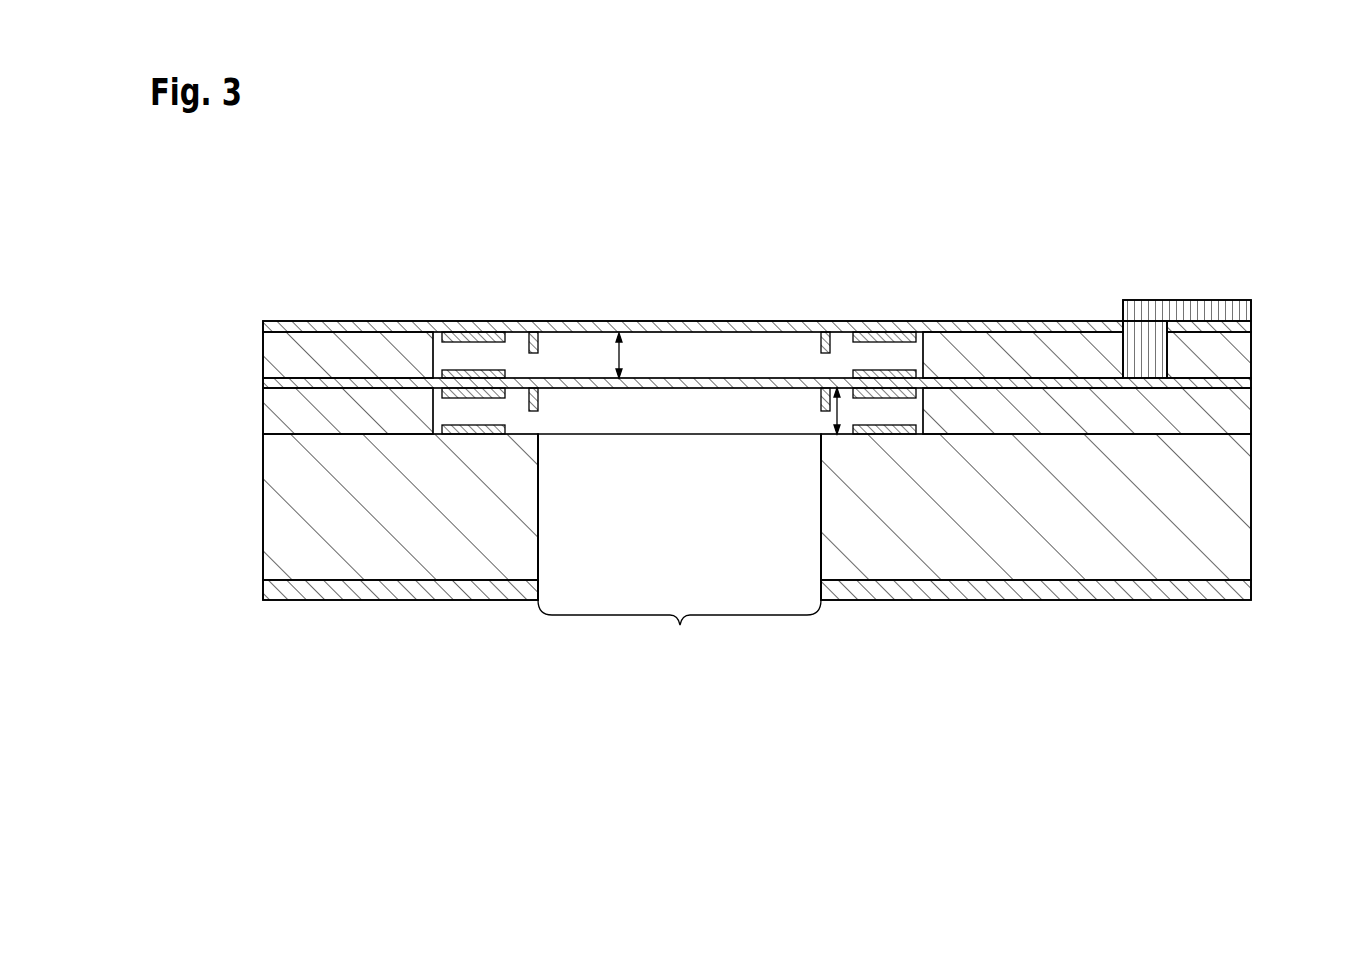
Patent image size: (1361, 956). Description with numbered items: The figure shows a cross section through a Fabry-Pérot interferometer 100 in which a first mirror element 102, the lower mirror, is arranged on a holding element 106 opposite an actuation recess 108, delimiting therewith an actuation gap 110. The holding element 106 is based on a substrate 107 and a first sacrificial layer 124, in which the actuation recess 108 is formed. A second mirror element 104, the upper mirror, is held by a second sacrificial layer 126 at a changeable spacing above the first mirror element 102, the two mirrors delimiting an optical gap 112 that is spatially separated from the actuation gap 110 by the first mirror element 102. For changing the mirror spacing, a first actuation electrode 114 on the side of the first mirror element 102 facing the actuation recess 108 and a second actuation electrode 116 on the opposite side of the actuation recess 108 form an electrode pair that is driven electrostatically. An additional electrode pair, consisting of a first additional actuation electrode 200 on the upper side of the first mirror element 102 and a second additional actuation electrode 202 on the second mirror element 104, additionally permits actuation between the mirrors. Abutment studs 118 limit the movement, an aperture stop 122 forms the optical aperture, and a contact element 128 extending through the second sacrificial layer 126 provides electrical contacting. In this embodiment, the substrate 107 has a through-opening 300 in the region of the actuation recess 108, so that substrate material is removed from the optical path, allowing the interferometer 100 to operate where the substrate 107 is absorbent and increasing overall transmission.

The interferometer 100 is at (262, 253).
The first mirror element 102 is at (1238, 384).
The second mirror element 104 is at (263, 329).
The holding element 106 is at (733, 484).
The substrate 107 is at (763, 507).
The actuation recess 108 is at (671, 427).
The actuation gap 110 is at (837, 412).
The optical gap 112 is at (619, 352).
The first actuation electrode 114 is at (492, 400).
The second actuation electrode 116 is at (452, 432).
The abutment studs 118 is at (540, 402).
The aperture stop 122 is at (342, 592).
The first sacrificial layer 124 is at (285, 408).
The second sacrificial layer 126 is at (316, 345).
The contact element 128 is at (1195, 306).
The first additional actuation electrode 200 is at (478, 368).
The second additional actuation electrode 202 is at (450, 335).
The through-opening 300 is at (679, 629).